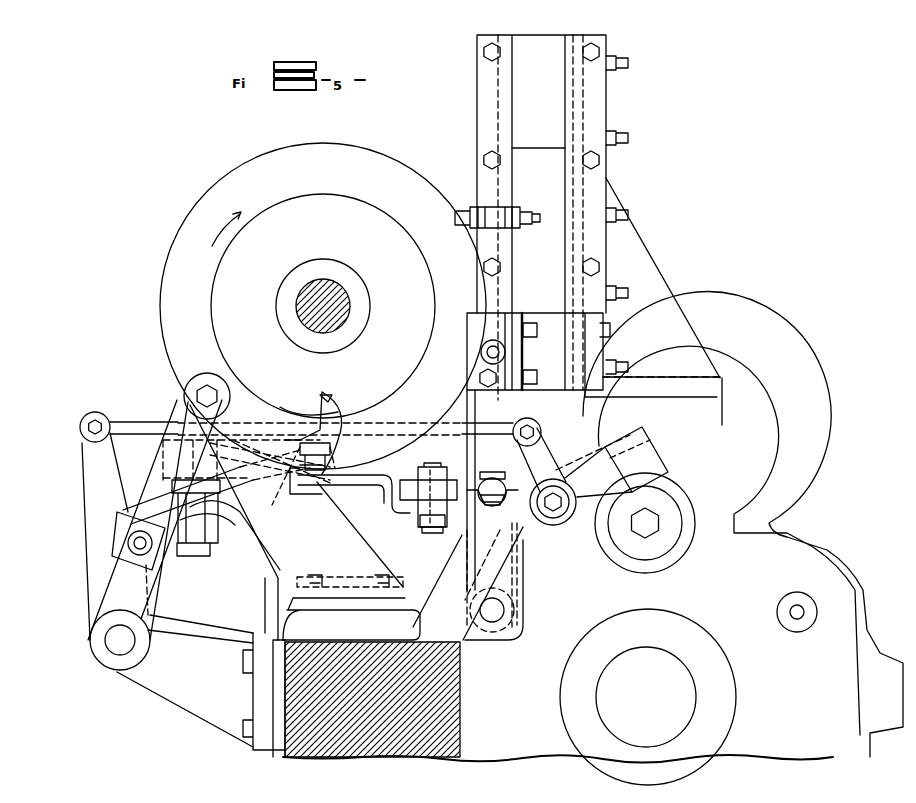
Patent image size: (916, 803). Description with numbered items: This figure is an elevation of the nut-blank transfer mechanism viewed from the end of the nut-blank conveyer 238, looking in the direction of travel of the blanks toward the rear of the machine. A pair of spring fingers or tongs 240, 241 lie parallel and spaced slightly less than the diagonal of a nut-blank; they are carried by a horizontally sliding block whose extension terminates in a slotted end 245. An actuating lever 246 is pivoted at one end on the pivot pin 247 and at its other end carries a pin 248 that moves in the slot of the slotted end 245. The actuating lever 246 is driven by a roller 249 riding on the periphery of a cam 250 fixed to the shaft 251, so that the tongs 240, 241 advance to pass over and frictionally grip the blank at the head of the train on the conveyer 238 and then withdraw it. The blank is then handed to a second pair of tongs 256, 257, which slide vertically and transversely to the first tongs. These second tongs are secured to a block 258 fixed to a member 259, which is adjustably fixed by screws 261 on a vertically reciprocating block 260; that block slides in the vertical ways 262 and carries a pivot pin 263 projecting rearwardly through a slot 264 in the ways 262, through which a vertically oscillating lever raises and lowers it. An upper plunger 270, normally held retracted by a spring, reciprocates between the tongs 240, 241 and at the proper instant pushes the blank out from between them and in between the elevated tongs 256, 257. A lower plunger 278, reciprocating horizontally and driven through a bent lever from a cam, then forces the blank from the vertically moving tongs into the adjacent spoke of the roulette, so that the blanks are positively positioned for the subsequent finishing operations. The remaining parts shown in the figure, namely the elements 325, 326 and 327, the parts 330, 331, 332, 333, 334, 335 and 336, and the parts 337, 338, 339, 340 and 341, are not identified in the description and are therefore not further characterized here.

The nut-blank conveyer 238 is at (518, 540).
The spring finger or tong 240 is at (492, 477).
The spring finger or tong 241 is at (500, 529).
The slotted end 245 is at (435, 522).
The actuating lever 246 is at (365, 478).
The pivot pin 247 is at (205, 545).
The pin 248 is at (432, 469).
The roller 249 is at (331, 456).
The cam 250 is at (323, 306).
The shaft 251 is at (322, 282).
The second tong 256 is at (466, 641).
The second tong 257 is at (516, 573).
The block 258 is at (516, 350).
The member 259 is at (525, 383).
The vertically reciprocating block 260 is at (541, 217).
The screws 261 is at (600, 331).
The vertical ways 262 is at (574, 91).
The pivot pin 263 is at (482, 352).
The slot 264 is at (566, 166).
The upper plunger 270 is at (500, 486).
The lower plunger 278 is at (497, 610).
The boss 325 is at (781, 612).
The hole 326 is at (797, 605).
The pulley 327 is at (680, 530).
The lever 330 is at (595, 462).
The block 331 is at (658, 467).
The link rod 332 is at (490, 436).
The arm 333 is at (86, 527).
The pivot boss 334 is at (100, 645).
The pivot block 335 is at (138, 575).
The lever 336 is at (182, 406).
The bracket 337 is at (300, 522).
The pivot nut 338 is at (205, 378).
The cam follower 339 is at (338, 416).
The cam wheel 340 is at (323, 306).
The cam notch 341 is at (325, 396).